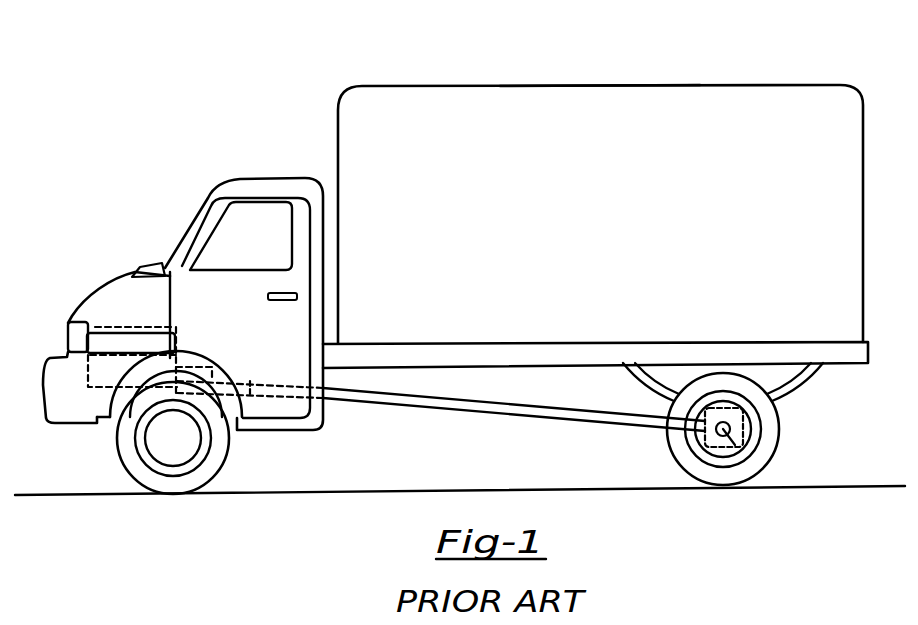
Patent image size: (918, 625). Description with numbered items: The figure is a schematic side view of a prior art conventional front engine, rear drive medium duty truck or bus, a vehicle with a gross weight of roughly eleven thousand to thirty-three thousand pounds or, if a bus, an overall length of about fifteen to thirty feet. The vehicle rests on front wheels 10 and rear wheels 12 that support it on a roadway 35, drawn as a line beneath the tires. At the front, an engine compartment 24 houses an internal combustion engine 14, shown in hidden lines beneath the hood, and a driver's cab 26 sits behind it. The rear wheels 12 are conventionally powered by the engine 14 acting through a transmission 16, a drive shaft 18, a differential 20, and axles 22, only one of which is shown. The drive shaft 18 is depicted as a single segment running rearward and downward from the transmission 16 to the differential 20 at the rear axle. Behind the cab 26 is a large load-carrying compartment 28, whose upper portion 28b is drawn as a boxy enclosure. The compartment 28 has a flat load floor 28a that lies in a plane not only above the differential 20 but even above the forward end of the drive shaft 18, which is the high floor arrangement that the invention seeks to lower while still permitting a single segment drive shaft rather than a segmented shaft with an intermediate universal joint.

The front wheels 10 is at (143, 474).
The rear wheels 12 is at (683, 459).
The internal combustion engine 14 is at (138, 343).
The transmission 16 is at (200, 373).
The drive shaft 18 is at (409, 402).
The differential 20 is at (743, 420).
The axles 22 is at (743, 447).
The engine compartment 24 is at (103, 306).
The driver's cab 26 is at (258, 193).
The load-carrying compartment 28 is at (365, 123).
The load floor 28a is at (418, 344).
The cargo box roof 28b is at (563, 86).
The roadway 35 is at (237, 496).